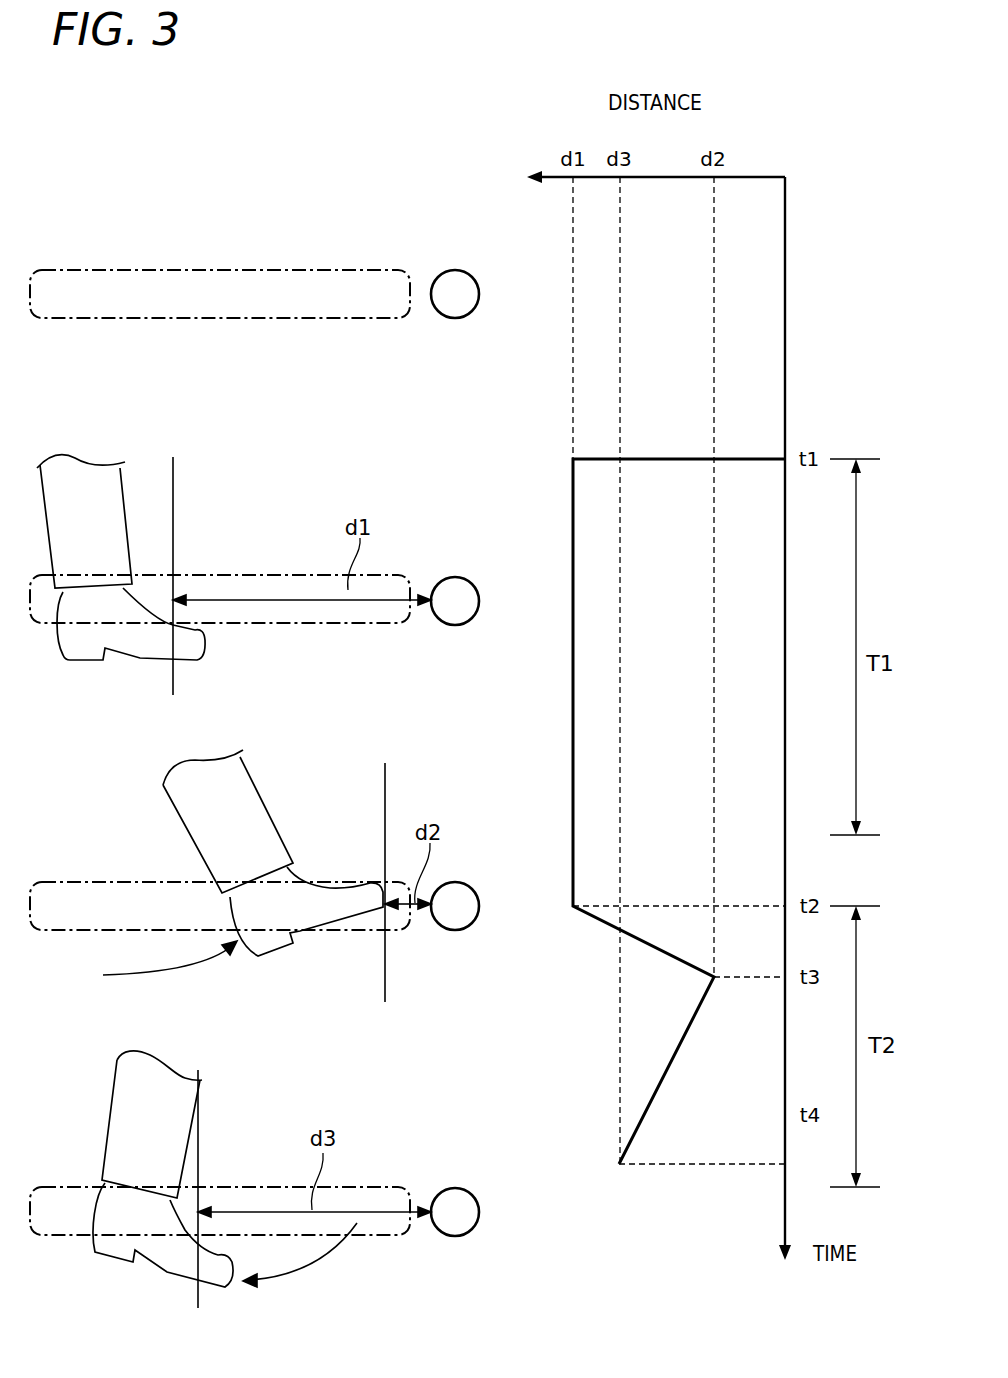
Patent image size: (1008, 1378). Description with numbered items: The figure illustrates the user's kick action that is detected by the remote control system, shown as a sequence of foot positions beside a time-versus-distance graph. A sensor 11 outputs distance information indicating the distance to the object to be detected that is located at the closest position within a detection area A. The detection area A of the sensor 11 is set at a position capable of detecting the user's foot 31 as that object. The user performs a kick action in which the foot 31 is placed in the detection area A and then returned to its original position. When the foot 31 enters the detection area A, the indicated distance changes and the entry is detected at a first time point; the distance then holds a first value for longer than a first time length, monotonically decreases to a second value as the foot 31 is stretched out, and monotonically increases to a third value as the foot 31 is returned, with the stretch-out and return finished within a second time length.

The sensor 11 is at (455, 277).
The foot 31 is at (93, 477).
The detection area A is at (268, 270).